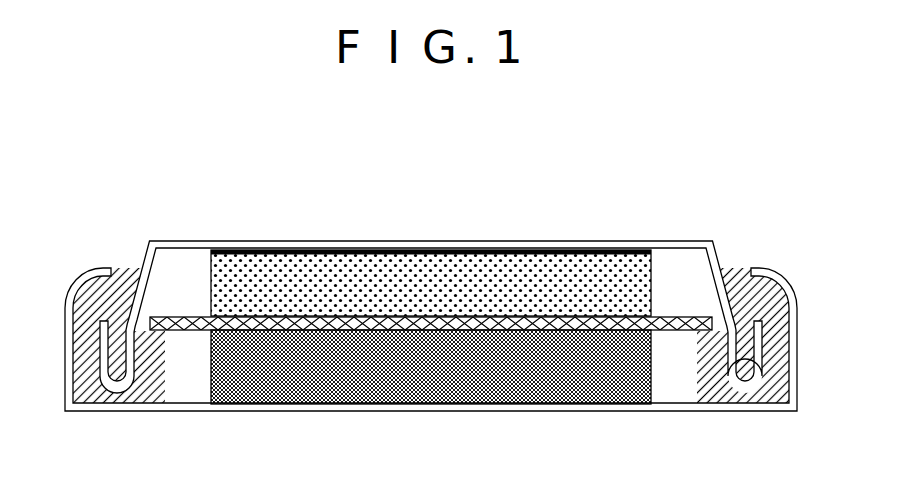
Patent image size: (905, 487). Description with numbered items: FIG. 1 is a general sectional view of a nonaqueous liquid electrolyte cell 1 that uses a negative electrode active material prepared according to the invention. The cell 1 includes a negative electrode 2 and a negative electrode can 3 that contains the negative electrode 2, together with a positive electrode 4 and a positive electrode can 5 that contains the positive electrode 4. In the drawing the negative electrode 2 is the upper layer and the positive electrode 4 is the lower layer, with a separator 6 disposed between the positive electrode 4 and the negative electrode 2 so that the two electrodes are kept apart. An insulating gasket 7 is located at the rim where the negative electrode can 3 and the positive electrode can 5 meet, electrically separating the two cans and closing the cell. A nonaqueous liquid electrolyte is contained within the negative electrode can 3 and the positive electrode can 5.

The nonaqueous liquid electrolyte cell 1 is at (170, 194).
The negative electrode 2 is at (408, 262).
The negative electrode can 3 is at (320, 231).
The positive electrode 4 is at (525, 397).
The positive electrode can 5 is at (380, 401).
The separator 6 is at (563, 315).
The insulating gasket 7 is at (772, 330).